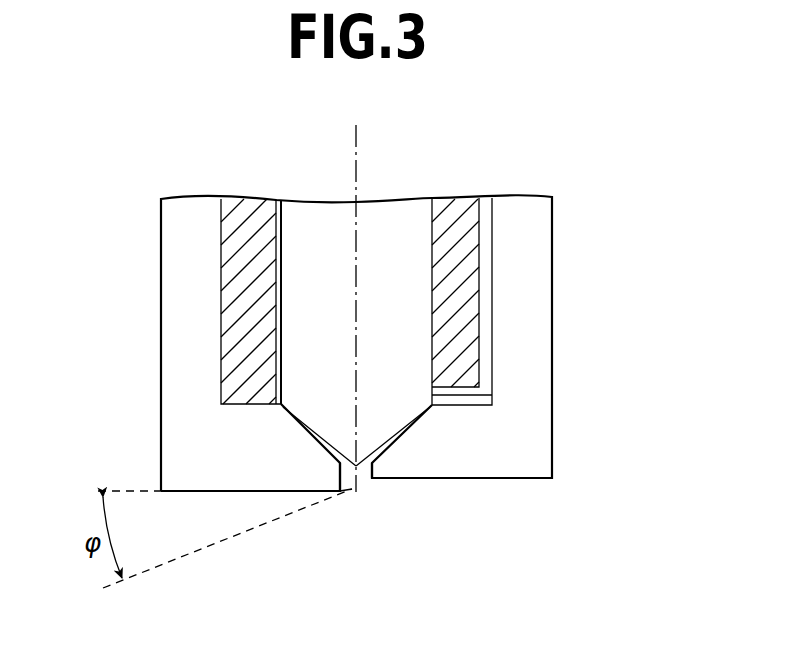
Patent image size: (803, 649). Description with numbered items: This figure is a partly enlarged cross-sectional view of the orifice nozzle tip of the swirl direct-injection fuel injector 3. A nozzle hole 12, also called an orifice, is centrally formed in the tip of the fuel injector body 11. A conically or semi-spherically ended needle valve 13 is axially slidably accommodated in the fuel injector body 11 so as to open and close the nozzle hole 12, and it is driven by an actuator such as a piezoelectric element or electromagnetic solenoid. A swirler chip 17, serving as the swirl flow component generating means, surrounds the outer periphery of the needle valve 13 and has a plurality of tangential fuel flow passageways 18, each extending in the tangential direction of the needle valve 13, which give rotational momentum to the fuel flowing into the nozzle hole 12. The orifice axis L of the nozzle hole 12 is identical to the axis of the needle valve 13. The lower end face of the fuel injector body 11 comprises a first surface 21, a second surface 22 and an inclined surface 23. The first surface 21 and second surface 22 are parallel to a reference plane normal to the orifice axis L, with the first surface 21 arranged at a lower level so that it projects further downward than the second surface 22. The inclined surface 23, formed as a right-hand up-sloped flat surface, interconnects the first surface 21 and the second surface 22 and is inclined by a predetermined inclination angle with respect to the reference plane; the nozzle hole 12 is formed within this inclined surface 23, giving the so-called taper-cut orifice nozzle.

The injector 3 is at (416, 342).
The fuel injector body 11 is at (541, 335).
The nozzle hole 12 is at (362, 472).
The needle valve 13 is at (315, 232).
The swirler chip 17 is at (232, 304).
The tangential fuel flow passageways 18 is at (468, 398).
The first surface 21 is at (227, 492).
The second surface 22 is at (505, 480).
The inclined surface 23 is at (346, 491).
The orifice axis L is at (358, 150).